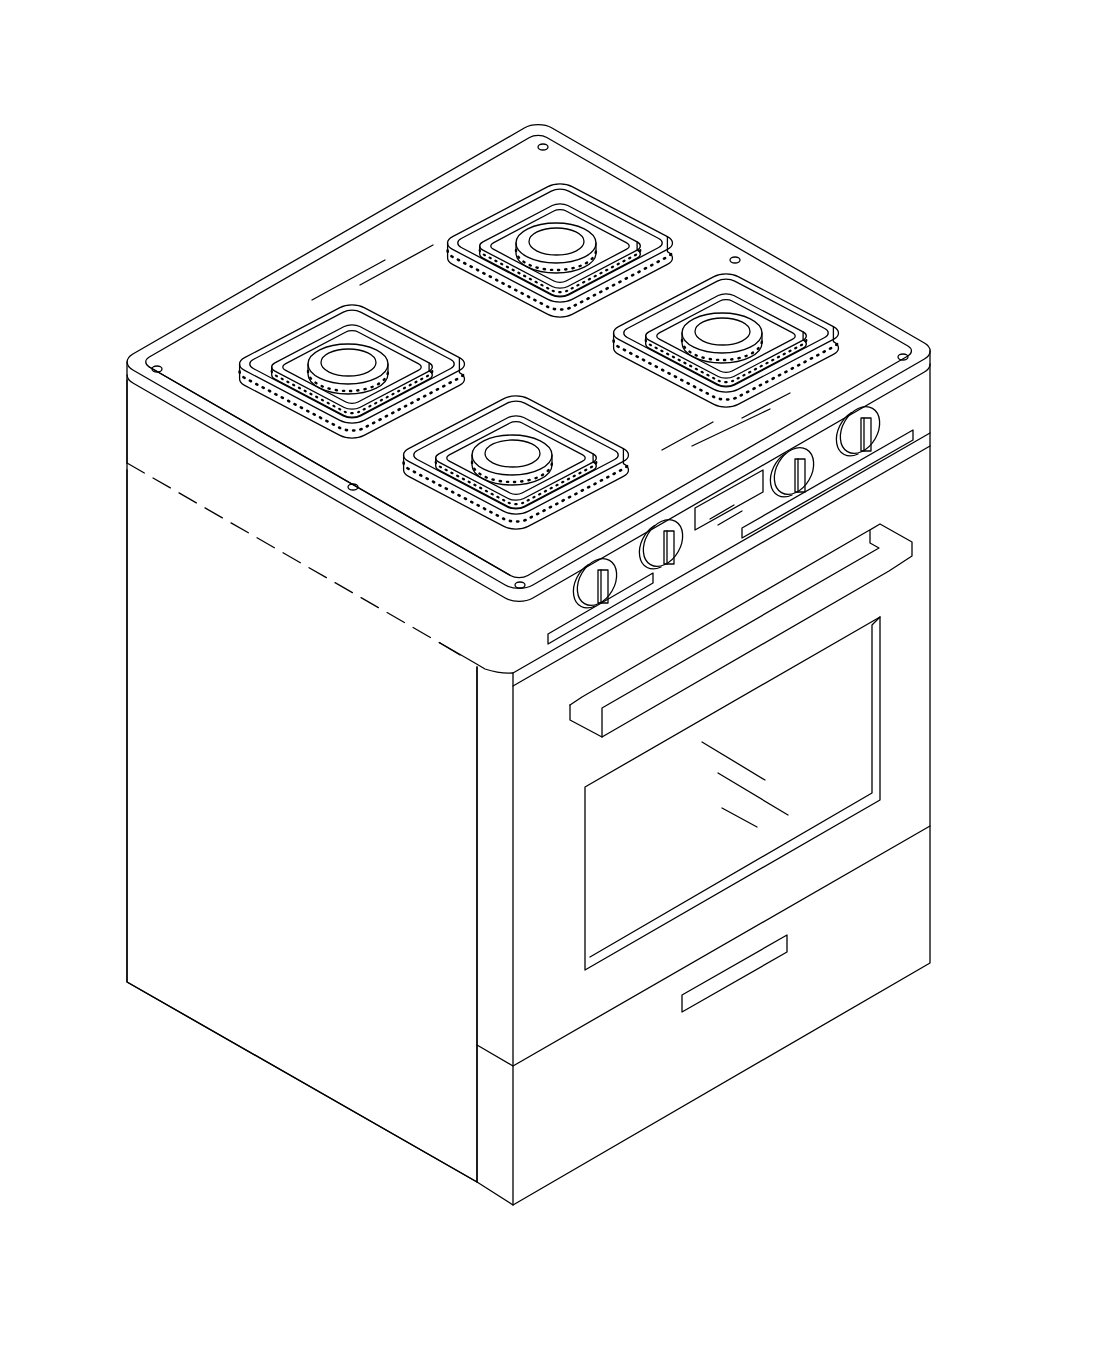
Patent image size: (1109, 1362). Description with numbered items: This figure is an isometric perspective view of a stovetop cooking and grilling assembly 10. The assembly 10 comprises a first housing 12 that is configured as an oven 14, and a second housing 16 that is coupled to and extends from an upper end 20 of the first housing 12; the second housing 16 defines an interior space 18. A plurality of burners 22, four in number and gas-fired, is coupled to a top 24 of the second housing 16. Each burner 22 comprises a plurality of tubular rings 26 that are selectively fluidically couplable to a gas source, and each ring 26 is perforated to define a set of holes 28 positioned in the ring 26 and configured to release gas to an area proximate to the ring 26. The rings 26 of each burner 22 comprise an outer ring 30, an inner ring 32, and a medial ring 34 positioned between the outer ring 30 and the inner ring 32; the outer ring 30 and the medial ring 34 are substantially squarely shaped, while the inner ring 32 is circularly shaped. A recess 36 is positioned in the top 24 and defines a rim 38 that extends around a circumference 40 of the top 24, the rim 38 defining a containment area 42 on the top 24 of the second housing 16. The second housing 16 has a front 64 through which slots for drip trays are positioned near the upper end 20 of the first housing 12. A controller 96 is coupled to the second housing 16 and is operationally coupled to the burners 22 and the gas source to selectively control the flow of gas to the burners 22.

The stovetop cooking and grilling assembly 10 is at (242, 93).
The first housing 12 is at (128, 772).
The oven 14 is at (212, 901).
The second housing 16 is at (174, 430).
The interior space 18 is at (273, 495).
The upper end 20 is at (278, 553).
The burners 22 is at (603, 335).
The top 24 is at (486, 200).
The rings 26 is at (770, 338).
The set of holes 28 is at (795, 377).
The outer ring 30 is at (310, 312).
The inner ring 32 is at (347, 345).
The medial ring 34 is at (240, 362).
The recess 36 is at (202, 369).
The rim 38 is at (645, 180).
The circumference 40 is at (586, 140).
The containment area 42 is at (703, 247).
The front 64 is at (918, 396).
The controller 96 is at (617, 583).